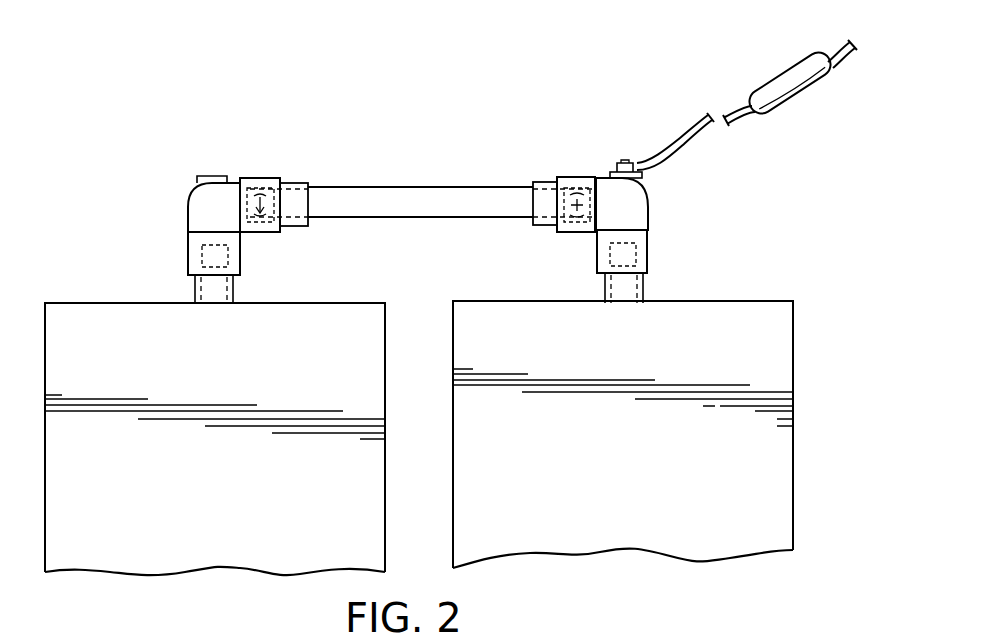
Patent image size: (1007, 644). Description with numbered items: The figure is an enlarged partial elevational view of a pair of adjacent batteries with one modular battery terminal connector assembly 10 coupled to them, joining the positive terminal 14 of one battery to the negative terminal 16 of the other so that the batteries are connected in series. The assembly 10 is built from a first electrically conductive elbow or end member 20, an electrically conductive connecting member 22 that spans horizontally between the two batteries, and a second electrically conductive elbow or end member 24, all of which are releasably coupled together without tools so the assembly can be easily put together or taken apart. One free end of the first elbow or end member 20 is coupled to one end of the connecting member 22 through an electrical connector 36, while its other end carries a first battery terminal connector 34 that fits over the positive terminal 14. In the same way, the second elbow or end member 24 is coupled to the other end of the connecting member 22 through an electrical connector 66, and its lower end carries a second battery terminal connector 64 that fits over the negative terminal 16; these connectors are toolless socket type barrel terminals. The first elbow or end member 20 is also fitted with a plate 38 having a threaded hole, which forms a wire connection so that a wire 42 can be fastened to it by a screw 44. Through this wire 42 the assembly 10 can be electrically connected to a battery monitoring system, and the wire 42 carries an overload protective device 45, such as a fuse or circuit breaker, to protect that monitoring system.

The modular battery terminal connector assembly 10 is at (438, 186).
The positive terminal 14 is at (647, 290).
The negative terminal 16 is at (236, 292).
The first electrically conductive elbow or end member 20 is at (652, 193).
The electrically conductive connecting member 22 is at (353, 187).
The second electrically conductive elbow or end member 24 is at (184, 200).
The first battery terminal connector 34 is at (602, 295).
The electrical connector 36 is at (543, 180).
The plate 38 is at (616, 164).
The wire 42 is at (691, 138).
The screw 44 is at (636, 165).
The overload protective device 45 is at (778, 74).
The second battery terminal connector 64 is at (195, 295).
The electrical connector 66 is at (297, 181).